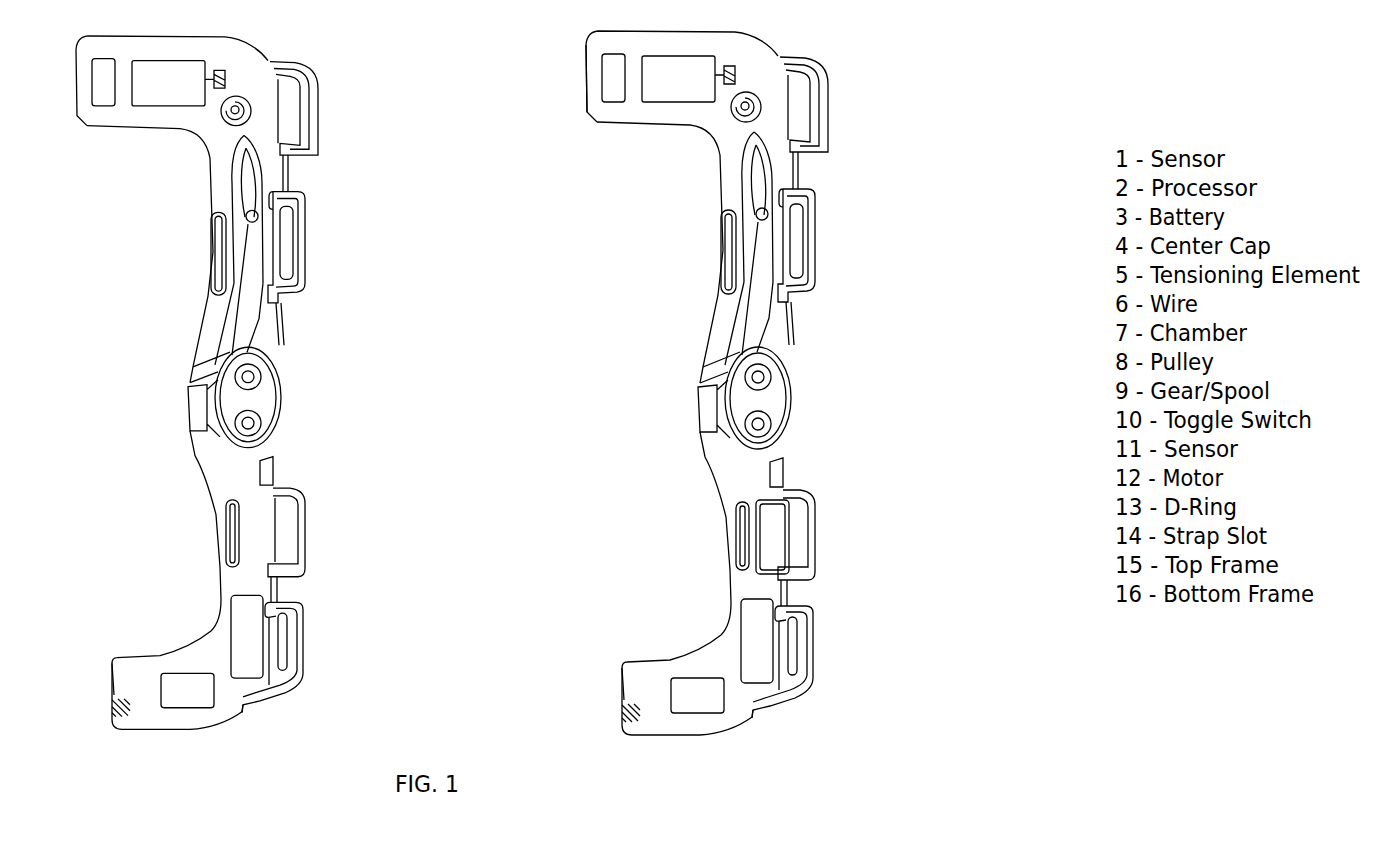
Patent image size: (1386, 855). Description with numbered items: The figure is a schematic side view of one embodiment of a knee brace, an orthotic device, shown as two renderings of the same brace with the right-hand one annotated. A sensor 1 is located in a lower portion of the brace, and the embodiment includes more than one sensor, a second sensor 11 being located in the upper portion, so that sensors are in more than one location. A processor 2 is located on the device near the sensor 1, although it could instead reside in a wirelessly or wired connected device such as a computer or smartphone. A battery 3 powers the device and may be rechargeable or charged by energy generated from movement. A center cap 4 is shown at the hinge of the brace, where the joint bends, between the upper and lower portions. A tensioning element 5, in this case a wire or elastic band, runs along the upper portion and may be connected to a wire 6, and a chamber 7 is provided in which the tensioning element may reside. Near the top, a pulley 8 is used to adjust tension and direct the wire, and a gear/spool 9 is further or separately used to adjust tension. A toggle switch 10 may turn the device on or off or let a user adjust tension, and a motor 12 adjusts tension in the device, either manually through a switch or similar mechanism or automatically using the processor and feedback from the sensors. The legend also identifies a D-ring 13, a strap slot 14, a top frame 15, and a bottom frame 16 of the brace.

The sensor 1 is at (668, 665).
The processor 2 is at (782, 638).
The battery 3 is at (797, 531).
The center cap 4 is at (797, 411).
The tensioning element 5 is at (760, 323).
The wire 6 is at (769, 189).
The chamber 7 is at (757, 152).
The pulley 8 is at (760, 104).
The gear/spool 9 is at (740, 74).
The toggle switch 10 is at (566, 47).
The sensor 11 is at (601, 112).
The motor 12 is at (671, 114).
The D-Ring 13 is at (796, 245).
The Strap Slot 14 is at (735, 390).
The Top Frame 15 is at (707, 207).
The Bottom Frame 16 is at (718, 583).